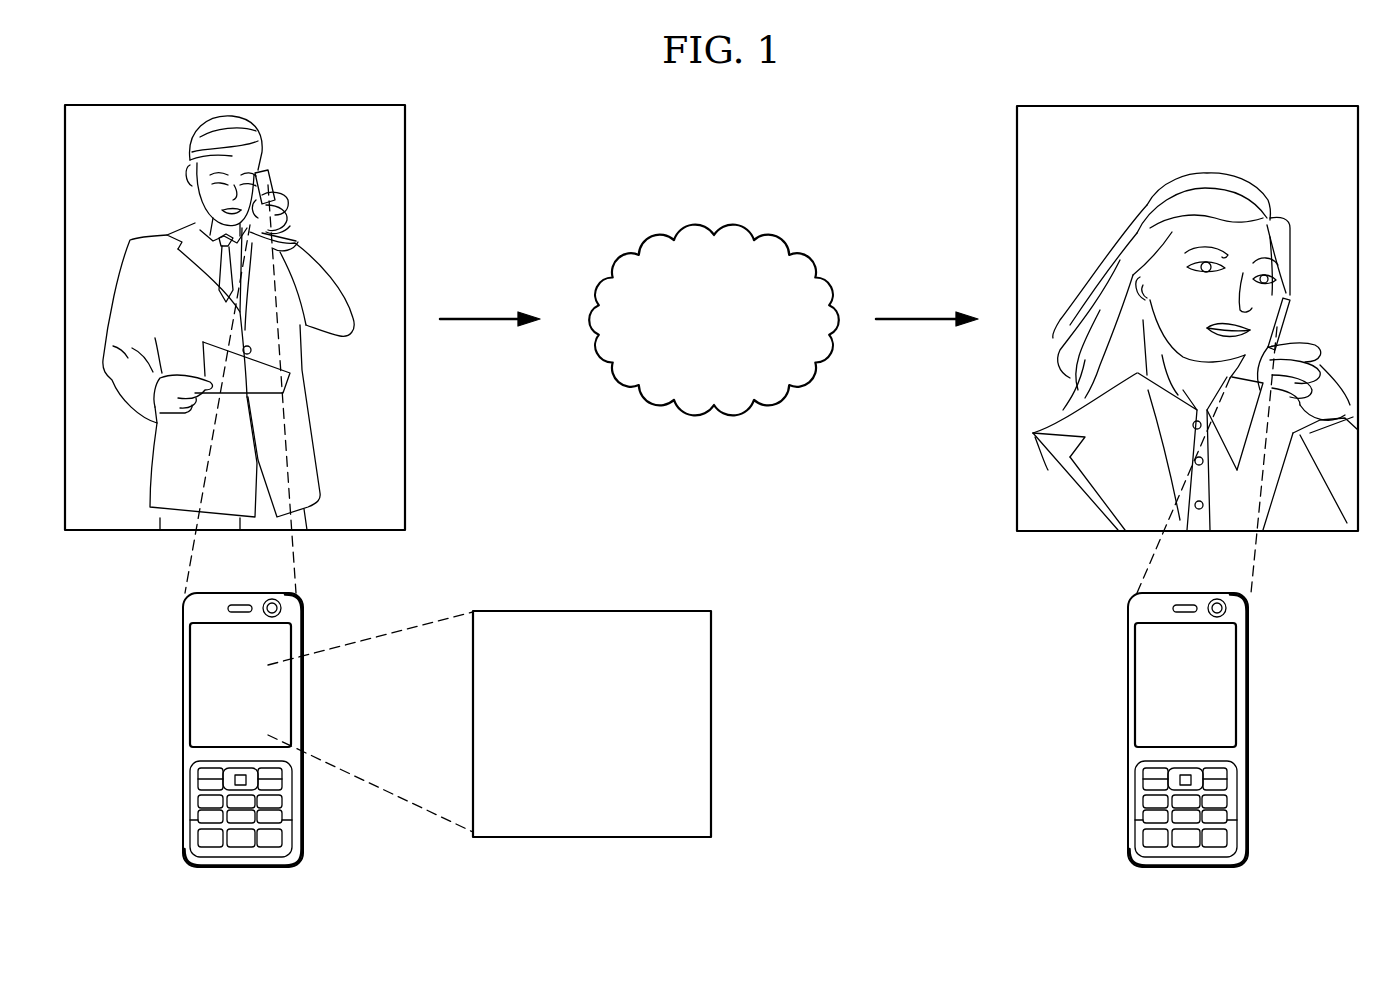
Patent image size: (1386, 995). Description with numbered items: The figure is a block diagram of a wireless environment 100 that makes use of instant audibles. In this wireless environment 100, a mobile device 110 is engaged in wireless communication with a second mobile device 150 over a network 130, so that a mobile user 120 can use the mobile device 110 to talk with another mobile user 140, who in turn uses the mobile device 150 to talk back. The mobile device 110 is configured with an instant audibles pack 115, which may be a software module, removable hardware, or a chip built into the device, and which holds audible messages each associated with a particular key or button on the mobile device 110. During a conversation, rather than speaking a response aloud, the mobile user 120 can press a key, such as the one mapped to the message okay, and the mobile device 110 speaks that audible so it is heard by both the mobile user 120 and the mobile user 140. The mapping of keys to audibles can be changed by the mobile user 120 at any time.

The wireless environment 100 is at (890, 86).
The mobile device 110 is at (183, 794).
The instant audibles pack 115 is at (711, 762).
The mobile user 120 is at (405, 197).
The network 130 is at (736, 355).
The mobile user 140 is at (1017, 197).
The mobile device 150 is at (1250, 793).